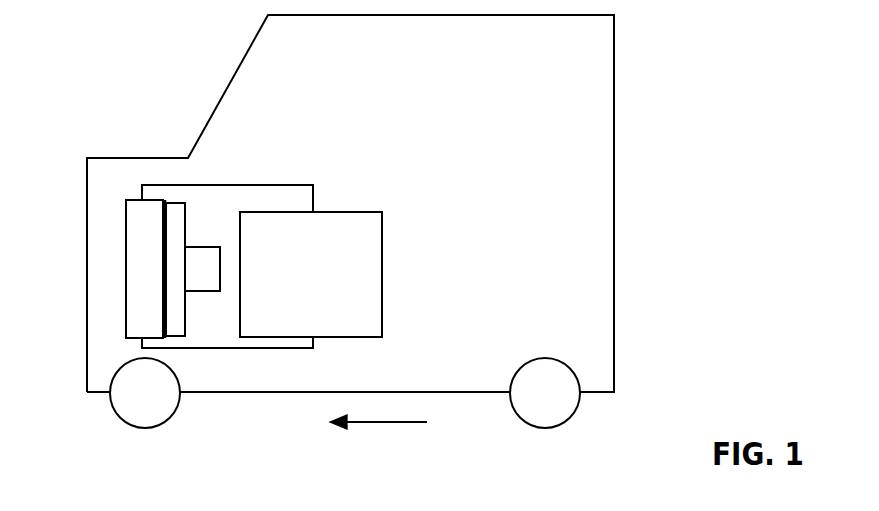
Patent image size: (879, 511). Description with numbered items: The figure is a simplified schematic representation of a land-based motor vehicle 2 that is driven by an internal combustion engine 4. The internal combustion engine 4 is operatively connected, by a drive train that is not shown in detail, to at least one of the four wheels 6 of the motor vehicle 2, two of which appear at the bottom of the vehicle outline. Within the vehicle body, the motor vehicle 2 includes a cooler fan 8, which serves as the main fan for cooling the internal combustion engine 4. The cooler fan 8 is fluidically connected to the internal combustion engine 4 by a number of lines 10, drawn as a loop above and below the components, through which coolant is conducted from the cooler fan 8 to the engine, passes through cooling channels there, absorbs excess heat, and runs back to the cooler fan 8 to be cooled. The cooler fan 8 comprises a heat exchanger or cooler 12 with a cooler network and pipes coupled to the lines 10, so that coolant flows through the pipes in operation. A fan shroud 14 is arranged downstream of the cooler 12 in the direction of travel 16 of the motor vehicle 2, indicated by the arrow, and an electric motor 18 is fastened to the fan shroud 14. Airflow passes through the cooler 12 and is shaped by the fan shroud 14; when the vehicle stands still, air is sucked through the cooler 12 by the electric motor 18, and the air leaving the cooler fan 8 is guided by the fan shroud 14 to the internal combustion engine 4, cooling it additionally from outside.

The motor vehicle 2 is at (614, 108).
The internal combustion engine 4 is at (298, 284).
The wheels 6 is at (136, 406).
The cooler fan 8 is at (130, 146).
The lines 10 is at (222, 185).
The cooler 12 is at (157, 284).
The fan shroud 14 is at (173, 227).
The direction of travel 16 is at (371, 422).
The electric motor 18 is at (217, 284).